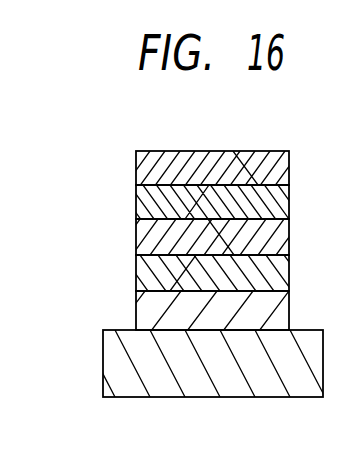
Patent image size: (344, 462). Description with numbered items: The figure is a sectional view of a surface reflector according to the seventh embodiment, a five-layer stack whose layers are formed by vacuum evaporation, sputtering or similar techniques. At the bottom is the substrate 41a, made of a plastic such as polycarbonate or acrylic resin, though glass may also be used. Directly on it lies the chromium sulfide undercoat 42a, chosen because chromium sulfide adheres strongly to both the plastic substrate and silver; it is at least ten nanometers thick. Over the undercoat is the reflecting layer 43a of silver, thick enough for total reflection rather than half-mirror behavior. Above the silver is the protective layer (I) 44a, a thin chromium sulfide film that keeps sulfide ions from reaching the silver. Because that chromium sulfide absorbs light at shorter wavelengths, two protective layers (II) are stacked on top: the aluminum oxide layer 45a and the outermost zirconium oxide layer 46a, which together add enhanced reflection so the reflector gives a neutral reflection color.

The zirconium oxide layer 46a is at (142, 165).
The aluminum oxide layer 45a is at (142, 200).
The protective layer (I) 44a is at (142, 236).
The reflecting layer 43a is at (142, 272).
The chromium sulfide undercoat 42a is at (142, 310).
The substrate 41a is at (114, 348).